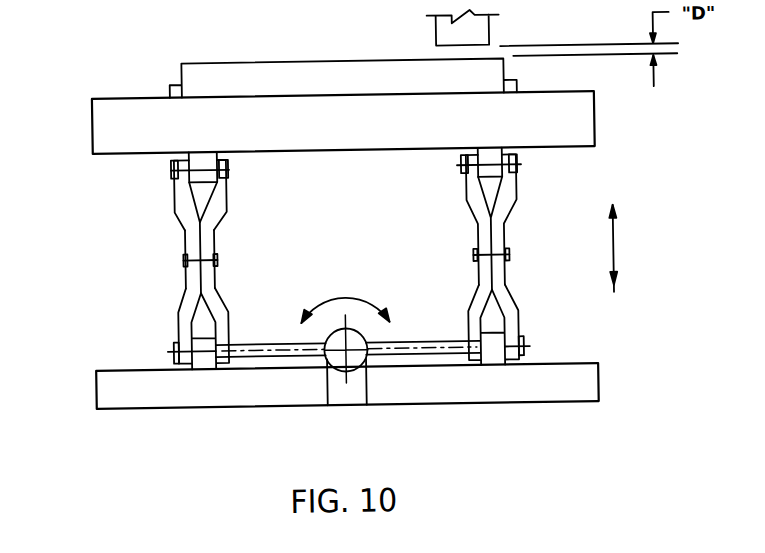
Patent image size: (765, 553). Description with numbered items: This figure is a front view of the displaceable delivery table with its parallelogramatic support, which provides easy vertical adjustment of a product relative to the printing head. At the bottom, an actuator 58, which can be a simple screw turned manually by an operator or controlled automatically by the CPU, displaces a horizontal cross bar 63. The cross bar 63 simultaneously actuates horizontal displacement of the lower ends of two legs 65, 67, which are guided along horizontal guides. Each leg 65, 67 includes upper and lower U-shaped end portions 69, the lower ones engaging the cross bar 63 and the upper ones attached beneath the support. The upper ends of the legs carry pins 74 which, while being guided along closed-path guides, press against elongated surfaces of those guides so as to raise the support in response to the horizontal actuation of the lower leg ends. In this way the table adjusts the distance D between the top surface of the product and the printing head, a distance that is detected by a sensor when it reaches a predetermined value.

The actuator 58 is at (353, 353).
The horizontal cross bar 63 is at (238, 346).
The leg 65 is at (203, 240).
The leg 67 is at (487, 245).
The U-shaped end portion 69 is at (183, 206).
The pin 74 is at (202, 165).